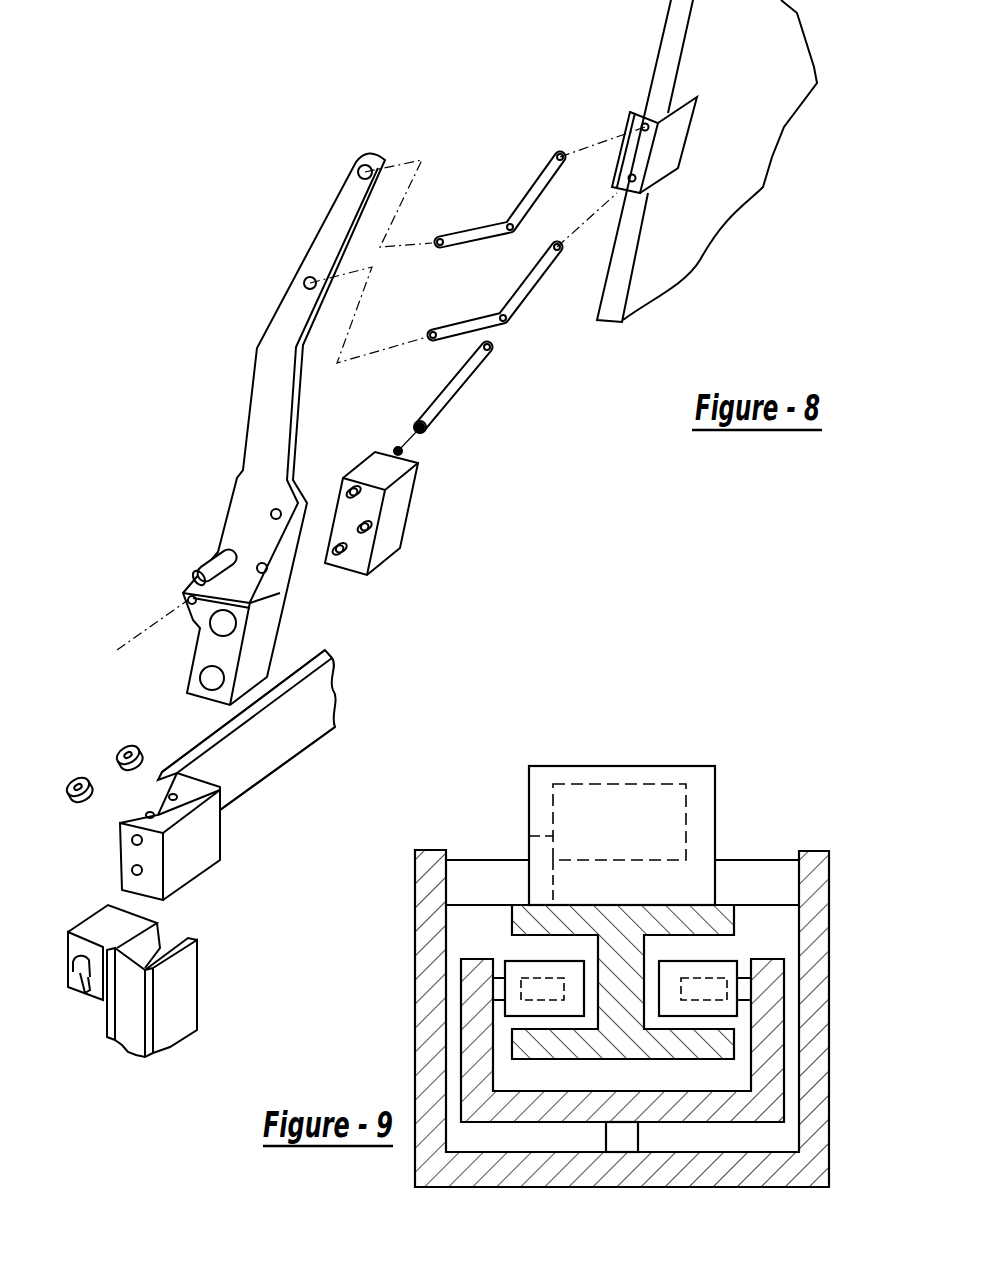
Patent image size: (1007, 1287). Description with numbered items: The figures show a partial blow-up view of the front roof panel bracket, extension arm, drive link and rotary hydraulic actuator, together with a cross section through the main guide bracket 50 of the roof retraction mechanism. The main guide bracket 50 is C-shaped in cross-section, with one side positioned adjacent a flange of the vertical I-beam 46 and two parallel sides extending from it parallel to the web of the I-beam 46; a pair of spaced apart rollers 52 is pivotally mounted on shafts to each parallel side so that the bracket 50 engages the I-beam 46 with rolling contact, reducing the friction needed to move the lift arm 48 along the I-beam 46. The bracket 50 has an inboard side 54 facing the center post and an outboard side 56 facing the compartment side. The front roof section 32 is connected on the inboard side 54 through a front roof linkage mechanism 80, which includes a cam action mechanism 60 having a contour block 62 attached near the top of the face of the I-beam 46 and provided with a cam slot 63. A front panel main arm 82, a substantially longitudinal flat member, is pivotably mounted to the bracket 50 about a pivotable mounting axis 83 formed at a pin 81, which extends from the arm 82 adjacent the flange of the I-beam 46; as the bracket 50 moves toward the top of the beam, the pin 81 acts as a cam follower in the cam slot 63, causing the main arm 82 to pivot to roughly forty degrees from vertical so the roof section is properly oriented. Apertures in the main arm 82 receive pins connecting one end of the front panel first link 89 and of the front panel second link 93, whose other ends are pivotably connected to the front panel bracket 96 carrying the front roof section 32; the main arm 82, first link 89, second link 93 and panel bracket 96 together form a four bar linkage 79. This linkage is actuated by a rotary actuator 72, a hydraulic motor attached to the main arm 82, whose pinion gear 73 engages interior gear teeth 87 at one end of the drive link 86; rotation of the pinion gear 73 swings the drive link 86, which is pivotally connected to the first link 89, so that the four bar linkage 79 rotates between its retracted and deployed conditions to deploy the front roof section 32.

In FIG. 8, the front roof section 32 is at (723, 176).
In FIG. 8, the vertical I-beam 46 is at (203, 973).
In FIG. 9, the vertical I-beam 46 is at (724, 905).
In FIG. 8, the lift arm 48 is at (323, 697).
In FIG. 8, the main guide bracket 50 is at (342, 746).
In FIG. 9, the main guide bracket 50 is at (477, 1136).
In FIG. 8, the roller 52 is at (77, 780).
In FIG. 9, the roller 52 is at (555, 961).
In FIG. 8, the inboard side 54 is at (198, 782).
In FIG. 9, the inboard side 54 is at (783, 1064).
In FIG. 8, the outboard side 56 is at (130, 843).
In FIG. 9, the outboard side 56 is at (464, 1039).
In FIG. 8, the cam action mechanism 60 is at (55, 985).
In FIG. 8, the contour block 62 is at (88, 922).
In FIG. 9, the contour block 62 is at (712, 766).
In FIG. 8, the cam slot 63 is at (77, 995).
In FIG. 9, the cam slot 63 is at (553, 796).
In FIG. 8, the rotary actuator 72 is at (412, 503).
In FIG. 8, the pinion gear 73 is at (403, 452).
In FIG. 8, the four bar linkage 79 is at (240, 228).
In FIG. 8, the front roof linkage mechanism 80 is at (153, 567).
In FIG. 8, the pin 81 is at (203, 568).
In FIG. 9, the pin 81 is at (478, 855).
In FIG. 8, the front panel main arm 82 is at (258, 423).
In FIG. 9, the front panel main arm 82 is at (829, 1036).
In FIG. 8, the pivotable mounting axis 83 is at (147, 627).
In FIG. 8, the drive link 86 is at (488, 347).
In FIG. 8, the interior gear teeth 87 is at (418, 426).
In FIG. 8, the front panel first link 89 is at (535, 295).
In FIG. 8, the front panel second link 93 is at (548, 181).
In FIG. 8, the front panel bracket 96 is at (648, 217).